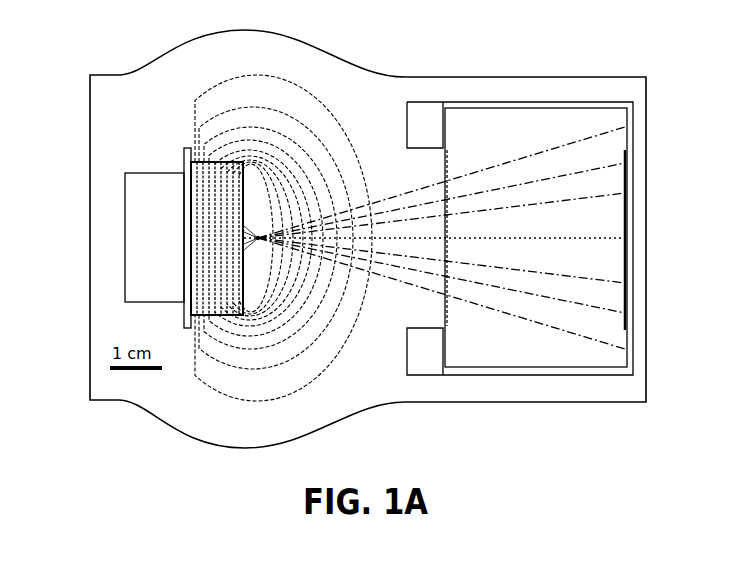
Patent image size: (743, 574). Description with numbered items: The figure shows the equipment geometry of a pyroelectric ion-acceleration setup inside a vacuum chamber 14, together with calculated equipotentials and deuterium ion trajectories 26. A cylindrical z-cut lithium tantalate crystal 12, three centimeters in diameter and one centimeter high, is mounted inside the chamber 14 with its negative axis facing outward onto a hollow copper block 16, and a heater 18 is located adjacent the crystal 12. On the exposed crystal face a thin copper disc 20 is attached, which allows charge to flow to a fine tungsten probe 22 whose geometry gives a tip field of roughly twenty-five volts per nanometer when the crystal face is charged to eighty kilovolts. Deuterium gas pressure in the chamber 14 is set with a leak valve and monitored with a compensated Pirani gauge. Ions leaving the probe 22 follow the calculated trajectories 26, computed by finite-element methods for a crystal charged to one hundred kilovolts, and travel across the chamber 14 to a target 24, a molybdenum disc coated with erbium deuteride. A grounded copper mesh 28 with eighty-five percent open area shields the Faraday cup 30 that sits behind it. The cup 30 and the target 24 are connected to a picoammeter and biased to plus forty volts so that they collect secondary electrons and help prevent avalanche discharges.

The cylindrical z-cut LiTaO3 crystal 12 is at (220, 316).
The chamber 14 is at (115, 385).
The hollow copper block 16 is at (615, 433).
The heater 18 is at (158, 207).
The copper disc 20 is at (247, 197).
The tungsten probe 22 is at (253, 242).
The target 24 is at (625, 150).
The D+ trajectories 26 is at (605, 340).
The grounded copper mesh 28 is at (448, 163).
The Faraday cup 30 is at (551, 122).